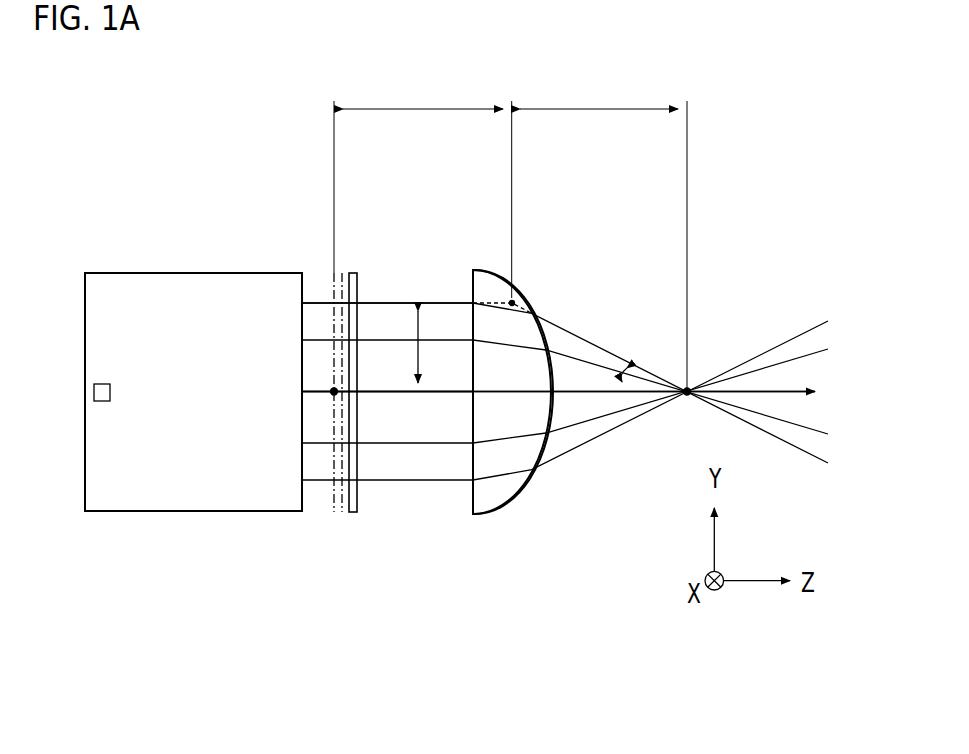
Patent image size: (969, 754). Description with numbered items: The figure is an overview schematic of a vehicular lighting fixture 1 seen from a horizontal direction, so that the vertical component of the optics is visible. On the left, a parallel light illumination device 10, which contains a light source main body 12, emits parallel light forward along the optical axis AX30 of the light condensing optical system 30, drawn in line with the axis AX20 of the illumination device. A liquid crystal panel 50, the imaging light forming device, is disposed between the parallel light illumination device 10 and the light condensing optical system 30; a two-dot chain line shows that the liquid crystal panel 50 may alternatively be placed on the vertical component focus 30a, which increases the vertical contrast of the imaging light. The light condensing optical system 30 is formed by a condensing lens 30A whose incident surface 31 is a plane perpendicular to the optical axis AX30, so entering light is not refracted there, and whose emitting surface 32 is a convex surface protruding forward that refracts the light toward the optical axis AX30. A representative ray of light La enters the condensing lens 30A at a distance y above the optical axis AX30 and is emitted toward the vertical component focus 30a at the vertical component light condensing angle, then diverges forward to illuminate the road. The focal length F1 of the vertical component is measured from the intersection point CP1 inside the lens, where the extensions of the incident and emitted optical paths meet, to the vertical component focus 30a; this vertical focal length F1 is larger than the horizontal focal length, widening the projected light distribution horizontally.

The vehicular lighting fixture 1 is at (854, 98).
The parallel light illumination device 10 is at (208, 264).
The light source main body 12 is at (102, 383).
The liquid crystal panel 50 is at (322, 268).
The light condensing optical system 30 is at (482, 260).
The condensing lens 30A is at (516, 284).
The incident surface 31 is at (472, 289).
The emitting surface 32 is at (505, 500).
The vertical component focus 30a is at (331, 397).
The intersection point CP1 is at (516, 302).
The light La is at (403, 302).
The distance y is at (420, 327).
The optical axis AX30 is at (453, 393).
The optical axis of collimator optical system AX20 is at (387, 482).
The focal length of the vertical component F1 is at (510, 231).